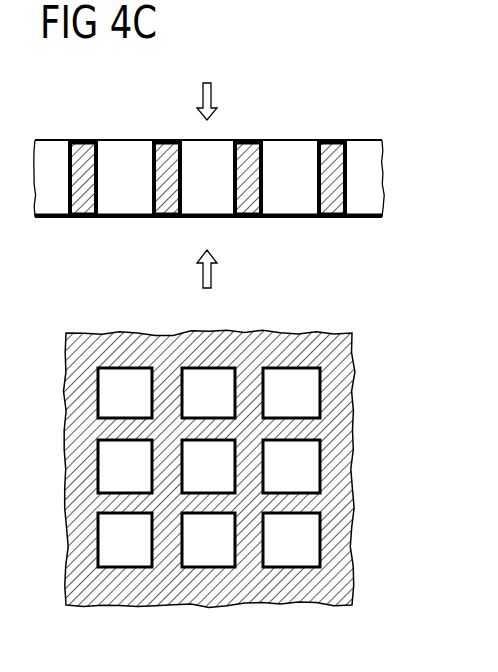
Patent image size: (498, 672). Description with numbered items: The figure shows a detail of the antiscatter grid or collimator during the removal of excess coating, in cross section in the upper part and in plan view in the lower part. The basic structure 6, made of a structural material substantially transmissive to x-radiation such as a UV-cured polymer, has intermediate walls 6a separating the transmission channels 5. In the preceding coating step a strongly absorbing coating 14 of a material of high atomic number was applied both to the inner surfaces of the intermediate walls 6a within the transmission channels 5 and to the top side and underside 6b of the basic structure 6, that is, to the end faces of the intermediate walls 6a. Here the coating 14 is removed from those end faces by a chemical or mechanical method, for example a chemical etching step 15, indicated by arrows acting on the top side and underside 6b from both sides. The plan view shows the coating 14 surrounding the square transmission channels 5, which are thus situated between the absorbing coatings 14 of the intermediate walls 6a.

The transmission channel 5 is at (288, 560).
The basic structure 6 is at (370, 140).
The intermediate wall 6a is at (345, 183).
The top side and underside 6b is at (291, 122).
The absorbing coating 14 is at (83, 140).
The chemical etching step 15 is at (202, 92).